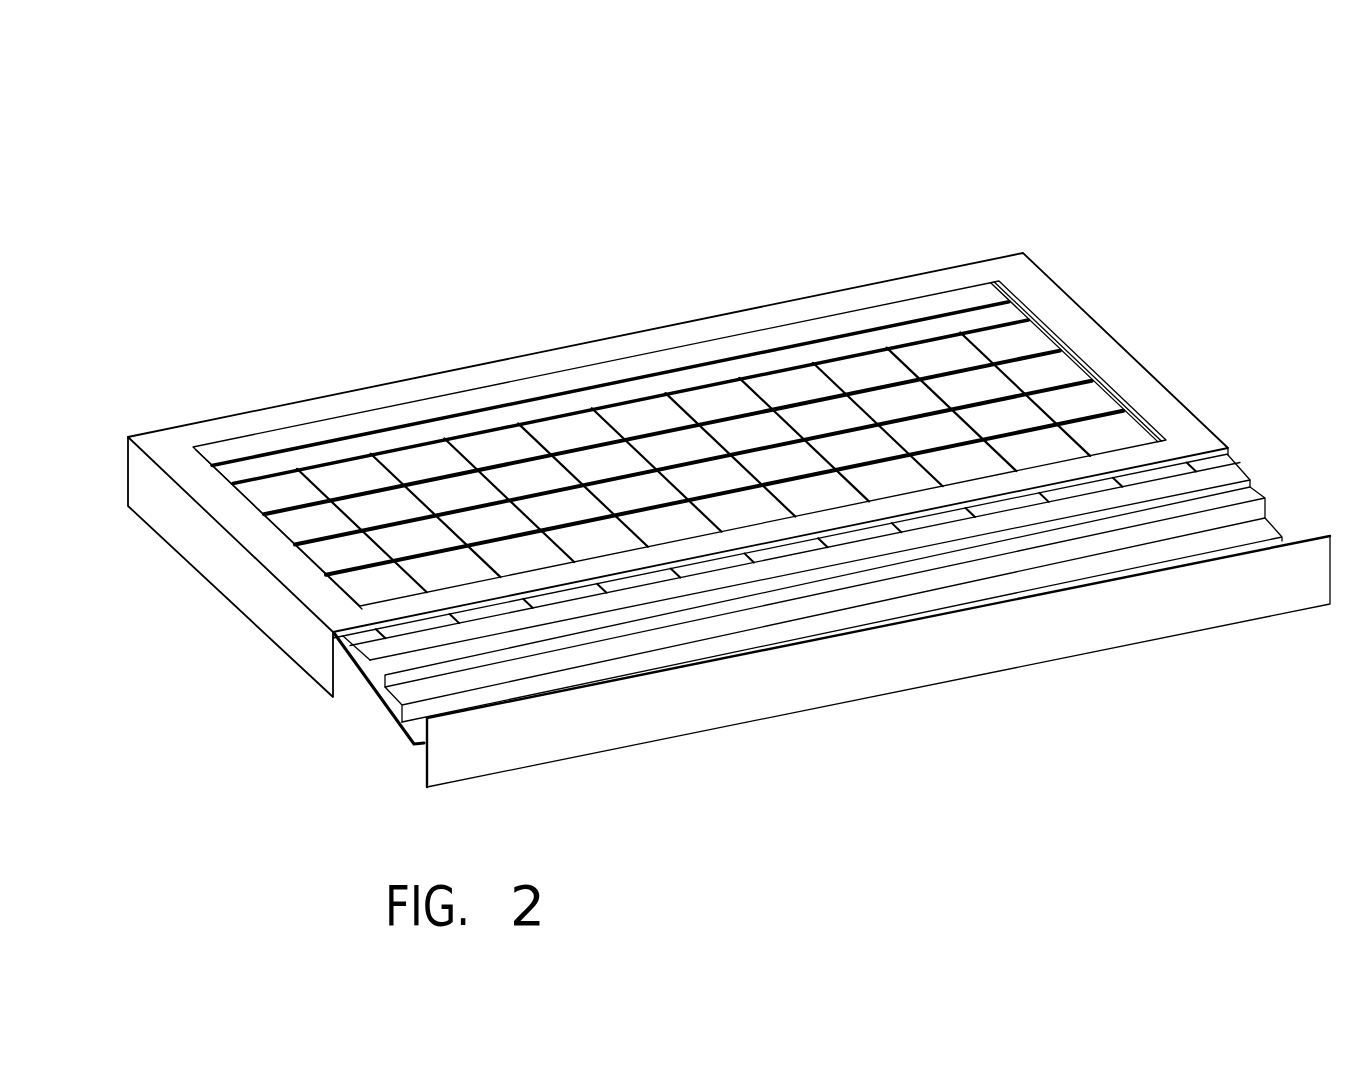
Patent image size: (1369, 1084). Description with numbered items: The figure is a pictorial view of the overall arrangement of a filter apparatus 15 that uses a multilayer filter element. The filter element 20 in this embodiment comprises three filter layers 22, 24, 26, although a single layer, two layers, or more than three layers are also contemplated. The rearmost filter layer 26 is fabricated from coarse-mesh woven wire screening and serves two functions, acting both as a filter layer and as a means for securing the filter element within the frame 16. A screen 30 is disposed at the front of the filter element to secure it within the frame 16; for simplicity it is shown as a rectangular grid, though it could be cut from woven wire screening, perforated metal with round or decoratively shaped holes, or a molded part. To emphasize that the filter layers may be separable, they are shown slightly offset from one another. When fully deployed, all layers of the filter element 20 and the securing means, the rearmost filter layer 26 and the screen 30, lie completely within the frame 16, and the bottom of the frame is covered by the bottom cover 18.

The filter apparatus 15 is at (1024, 151).
The frame 16 is at (1068, 289).
The bottom cover 18 is at (903, 697).
The filter element 20 is at (295, 779).
The filter layer 22 is at (368, 672).
The filter layer 24 is at (383, 705).
The rearmost filter layer 26 is at (413, 737).
The screen 30 is at (1239, 472).